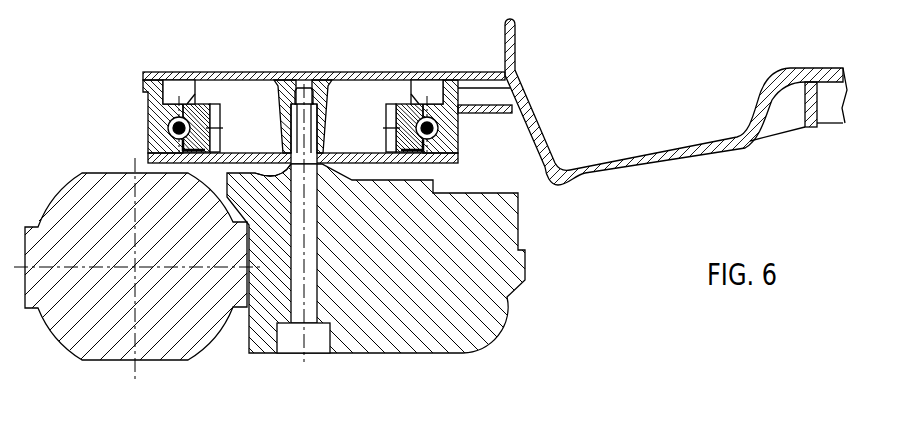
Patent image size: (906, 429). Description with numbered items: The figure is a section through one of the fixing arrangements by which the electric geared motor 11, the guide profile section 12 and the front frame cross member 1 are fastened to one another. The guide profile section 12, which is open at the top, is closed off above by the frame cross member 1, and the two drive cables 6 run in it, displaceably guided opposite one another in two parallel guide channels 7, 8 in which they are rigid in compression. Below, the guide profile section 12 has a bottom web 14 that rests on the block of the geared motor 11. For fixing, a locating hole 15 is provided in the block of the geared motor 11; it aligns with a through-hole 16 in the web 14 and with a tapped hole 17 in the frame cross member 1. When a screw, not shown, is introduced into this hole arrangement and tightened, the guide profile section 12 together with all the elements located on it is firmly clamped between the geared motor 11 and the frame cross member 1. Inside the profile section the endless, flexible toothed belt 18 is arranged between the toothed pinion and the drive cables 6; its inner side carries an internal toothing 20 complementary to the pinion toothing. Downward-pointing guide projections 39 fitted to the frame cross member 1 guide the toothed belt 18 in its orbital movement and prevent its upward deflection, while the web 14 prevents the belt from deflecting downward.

The front frame cross member 1 is at (233, 66).
The drive cable 6 is at (171, 135).
The guide channel 7 is at (440, 118).
The guide channel 8 is at (158, 104).
The electric geared motor 11 is at (431, 363).
The guide profile section 12 is at (150, 130).
The bottom web 14 is at (397, 160).
The locating hole 15 is at (308, 320).
The through-hole 16 is at (260, 169).
The tapped hole 17 is at (306, 98).
The toothed belt 18 is at (392, 96).
The internal toothing 20 is at (217, 118).
The guide projection 39 is at (195, 100).